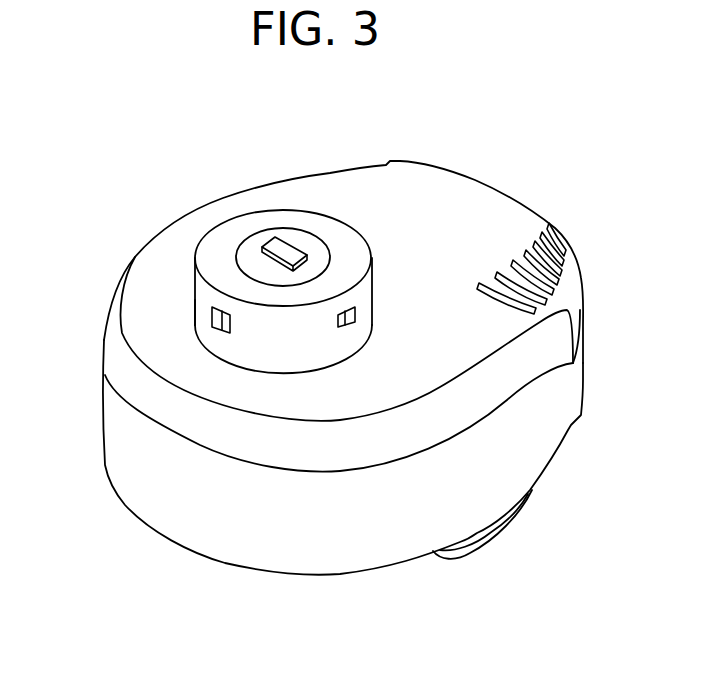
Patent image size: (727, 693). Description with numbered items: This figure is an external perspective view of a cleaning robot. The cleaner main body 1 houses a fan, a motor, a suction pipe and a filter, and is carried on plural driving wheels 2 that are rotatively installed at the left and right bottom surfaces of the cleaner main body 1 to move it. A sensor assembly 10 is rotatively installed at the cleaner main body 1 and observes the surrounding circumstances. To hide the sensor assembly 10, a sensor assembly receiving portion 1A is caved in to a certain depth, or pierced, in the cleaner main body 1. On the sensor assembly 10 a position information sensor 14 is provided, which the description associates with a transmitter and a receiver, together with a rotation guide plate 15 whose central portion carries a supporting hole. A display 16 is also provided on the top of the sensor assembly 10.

The cleaner main body 1 is at (112, 490).
The sensor assembly receiving portion 1A is at (196, 314).
The driving wheels 2 is at (473, 538).
The sensor assembly 10 is at (183, 247).
The position information sensor 14 is at (357, 316).
The rotation guide plate 15 is at (252, 258).
The display 16 is at (282, 246).